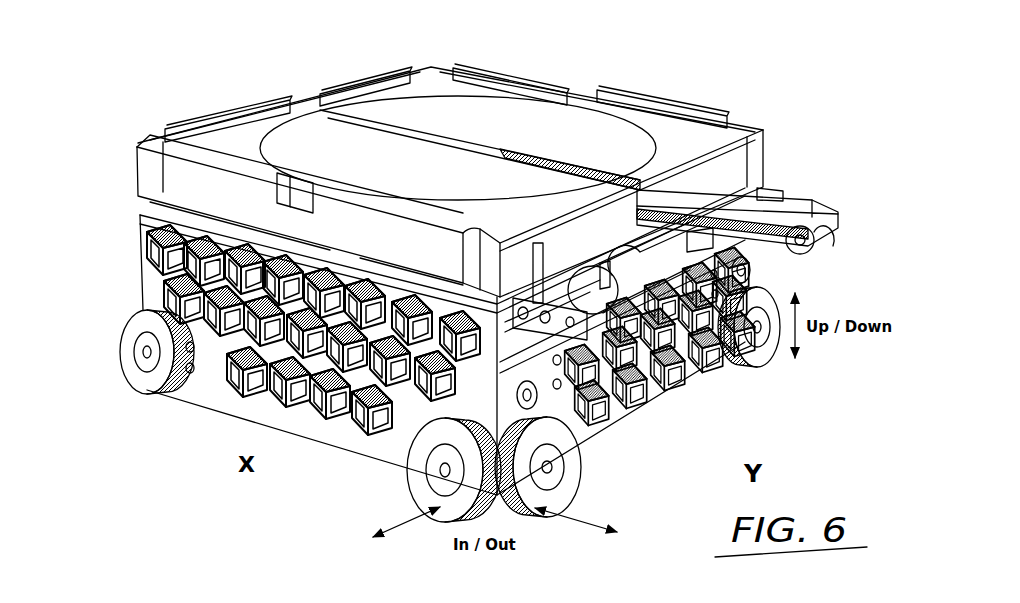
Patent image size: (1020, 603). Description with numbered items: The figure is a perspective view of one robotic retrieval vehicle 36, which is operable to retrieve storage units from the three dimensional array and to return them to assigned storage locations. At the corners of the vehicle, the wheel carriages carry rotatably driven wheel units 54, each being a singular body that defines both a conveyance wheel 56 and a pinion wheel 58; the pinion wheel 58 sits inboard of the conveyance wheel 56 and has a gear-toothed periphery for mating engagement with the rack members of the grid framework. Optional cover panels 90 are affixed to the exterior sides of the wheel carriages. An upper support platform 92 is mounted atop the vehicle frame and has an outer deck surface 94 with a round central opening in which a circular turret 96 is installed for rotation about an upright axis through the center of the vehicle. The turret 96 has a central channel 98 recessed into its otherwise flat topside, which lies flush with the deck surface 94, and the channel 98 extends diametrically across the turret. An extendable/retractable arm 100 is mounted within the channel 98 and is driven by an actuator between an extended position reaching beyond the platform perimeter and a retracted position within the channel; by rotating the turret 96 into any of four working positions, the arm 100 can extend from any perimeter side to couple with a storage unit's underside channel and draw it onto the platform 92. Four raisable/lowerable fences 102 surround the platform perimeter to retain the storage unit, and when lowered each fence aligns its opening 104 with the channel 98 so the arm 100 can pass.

The robotic retrieval vehicle 36 is at (124, 144).
The wheel unit 54 is at (750, 367).
The conveyance wheel 56 is at (150, 382).
The pinion wheel 58 is at (188, 383).
The cover panel 90 is at (750, 269).
The upper support platform 92 is at (600, 128).
The outer deck surface 94 is at (205, 148).
The circular turret 96 is at (277, 137).
The central channel 98 is at (418, 133).
The extendable/retractable arm 100 is at (812, 212).
The fence 102 is at (340, 223).
The opening 104 is at (575, 90).